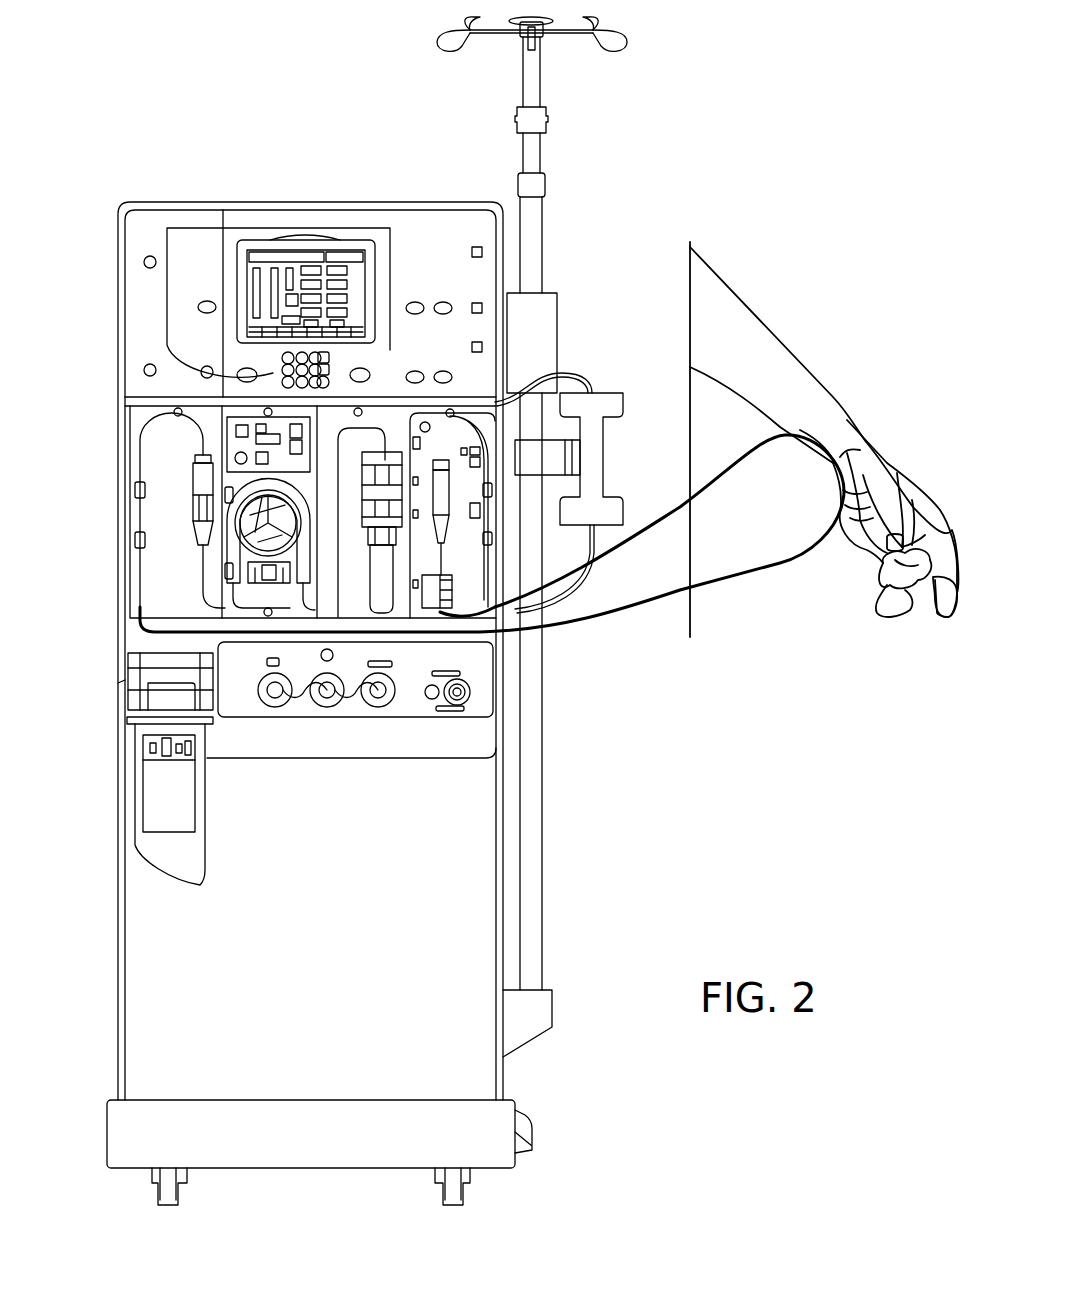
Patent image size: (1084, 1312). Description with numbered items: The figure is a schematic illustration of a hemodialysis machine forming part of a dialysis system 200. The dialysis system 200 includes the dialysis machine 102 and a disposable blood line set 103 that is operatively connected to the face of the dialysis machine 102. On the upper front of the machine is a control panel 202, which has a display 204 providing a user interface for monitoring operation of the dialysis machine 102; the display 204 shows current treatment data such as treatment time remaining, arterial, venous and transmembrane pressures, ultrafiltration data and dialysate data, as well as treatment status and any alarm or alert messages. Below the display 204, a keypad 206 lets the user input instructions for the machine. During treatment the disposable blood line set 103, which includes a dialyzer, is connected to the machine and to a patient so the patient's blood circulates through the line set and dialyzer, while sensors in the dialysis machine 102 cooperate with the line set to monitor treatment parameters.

The dialysis system 200 is at (686, 108).
The control panel 202 is at (150, 245).
The display 204 is at (268, 242).
The keypad 206 is at (273, 373).
The disposable blood line set 103 is at (140, 585).
The dialysis machine 102 is at (115, 683).